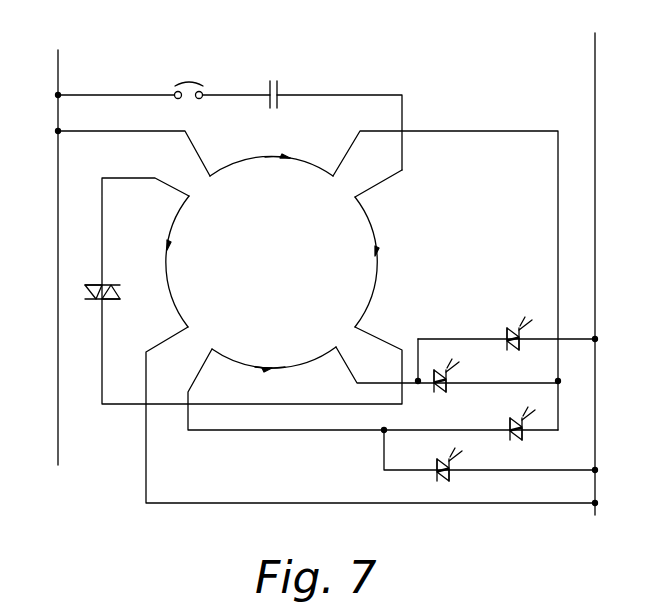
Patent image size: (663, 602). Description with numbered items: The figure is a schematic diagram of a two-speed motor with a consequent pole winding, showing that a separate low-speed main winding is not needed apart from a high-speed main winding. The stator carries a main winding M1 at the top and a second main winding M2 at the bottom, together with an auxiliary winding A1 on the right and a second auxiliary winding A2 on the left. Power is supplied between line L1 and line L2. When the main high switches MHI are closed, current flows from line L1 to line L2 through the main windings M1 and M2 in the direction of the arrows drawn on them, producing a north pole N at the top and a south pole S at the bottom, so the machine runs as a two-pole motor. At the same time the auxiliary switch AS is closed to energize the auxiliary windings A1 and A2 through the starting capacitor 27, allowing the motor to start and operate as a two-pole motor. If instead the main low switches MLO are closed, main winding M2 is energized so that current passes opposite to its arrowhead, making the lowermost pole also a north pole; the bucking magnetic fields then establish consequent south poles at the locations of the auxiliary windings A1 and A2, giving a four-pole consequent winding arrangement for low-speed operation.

The starting capacitor 27 is at (282, 90).
The line L1 is at (52, 247).
The line L2 is at (589, 263).
The main winding M1 is at (247, 158).
The second main winding M2 is at (297, 366).
The auxiliary winding A1 is at (371, 226).
The second auxiliary winding A2 is at (173, 300).
The auxiliary switch AS is at (120, 284).
The main high switches MHI is at (505, 328).
The main low switches MLO is at (432, 370).
The north pole N is at (277, 140).
The south pole S is at (270, 383).